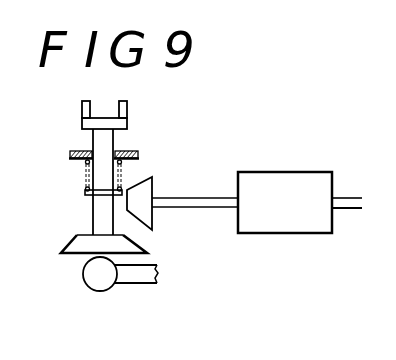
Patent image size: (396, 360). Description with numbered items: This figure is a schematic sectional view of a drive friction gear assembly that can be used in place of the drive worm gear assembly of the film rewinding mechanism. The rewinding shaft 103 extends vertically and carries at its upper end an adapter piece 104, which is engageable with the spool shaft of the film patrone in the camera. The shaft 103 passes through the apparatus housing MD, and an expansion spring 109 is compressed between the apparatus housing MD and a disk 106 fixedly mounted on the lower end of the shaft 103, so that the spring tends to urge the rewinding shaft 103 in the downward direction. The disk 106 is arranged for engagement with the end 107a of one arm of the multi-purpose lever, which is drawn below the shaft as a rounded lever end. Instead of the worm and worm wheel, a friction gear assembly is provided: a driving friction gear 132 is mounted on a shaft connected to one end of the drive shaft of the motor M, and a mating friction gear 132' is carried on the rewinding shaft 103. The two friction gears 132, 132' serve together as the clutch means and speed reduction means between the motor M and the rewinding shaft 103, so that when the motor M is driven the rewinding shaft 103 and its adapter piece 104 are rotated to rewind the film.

The adapter piece 104 is at (125, 110).
The rewinding shaft 103 is at (104, 142).
The apparatus housing MD is at (76, 151).
The expansion spring 109 is at (79, 173).
The disk 106 is at (86, 198).
The friction gear 132 is at (182, 195).
The motor M is at (300, 202).
The friction gear 132' is at (87, 266).
The end of one arm of the multi-purpose lever 107a is at (103, 285).